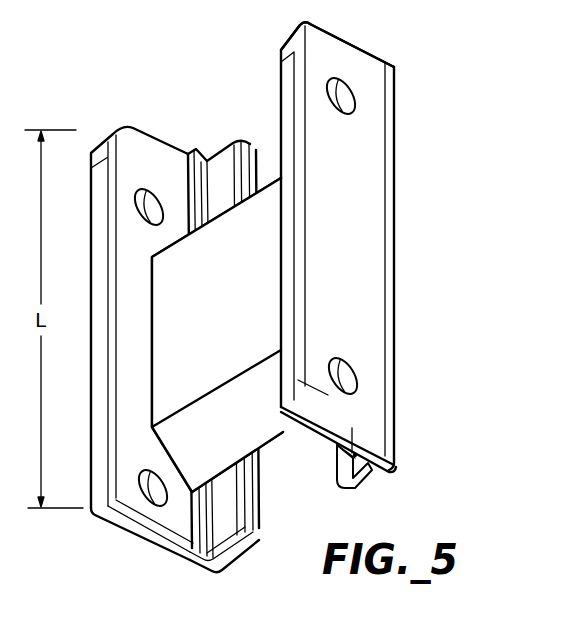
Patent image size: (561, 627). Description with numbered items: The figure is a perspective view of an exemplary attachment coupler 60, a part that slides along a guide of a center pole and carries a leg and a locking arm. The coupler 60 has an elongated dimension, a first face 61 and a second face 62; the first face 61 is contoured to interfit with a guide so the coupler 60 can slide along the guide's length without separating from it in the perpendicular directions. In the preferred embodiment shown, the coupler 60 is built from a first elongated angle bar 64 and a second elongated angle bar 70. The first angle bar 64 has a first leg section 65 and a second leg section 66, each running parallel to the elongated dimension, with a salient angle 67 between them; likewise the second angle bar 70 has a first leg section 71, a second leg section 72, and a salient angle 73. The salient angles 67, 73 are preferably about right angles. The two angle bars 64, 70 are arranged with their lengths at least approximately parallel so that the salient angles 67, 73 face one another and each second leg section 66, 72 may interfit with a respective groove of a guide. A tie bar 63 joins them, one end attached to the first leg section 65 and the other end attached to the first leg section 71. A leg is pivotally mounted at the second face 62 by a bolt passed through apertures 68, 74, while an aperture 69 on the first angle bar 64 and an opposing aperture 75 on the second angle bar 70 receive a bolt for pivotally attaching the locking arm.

The attachment coupler 60 is at (262, 300).
The first face 61 is at (398, 120).
The second face 62 is at (253, 122).
The tie bar 63 is at (234, 313).
The first elongated angle bar 64 is at (92, 514).
The first leg section 65 is at (163, 547).
The second leg section 66 is at (226, 562).
The salient angle 67 is at (213, 157).
The aperture 68 is at (138, 481).
The aperture 69 is at (133, 209).
The second elongated angle bar 70 is at (280, 40).
The first leg section 71 is at (370, 200).
The second leg section 72 is at (372, 478).
The salient angle 73 is at (333, 437).
The aperture 74 is at (360, 388).
The aperture 75 is at (340, 77).